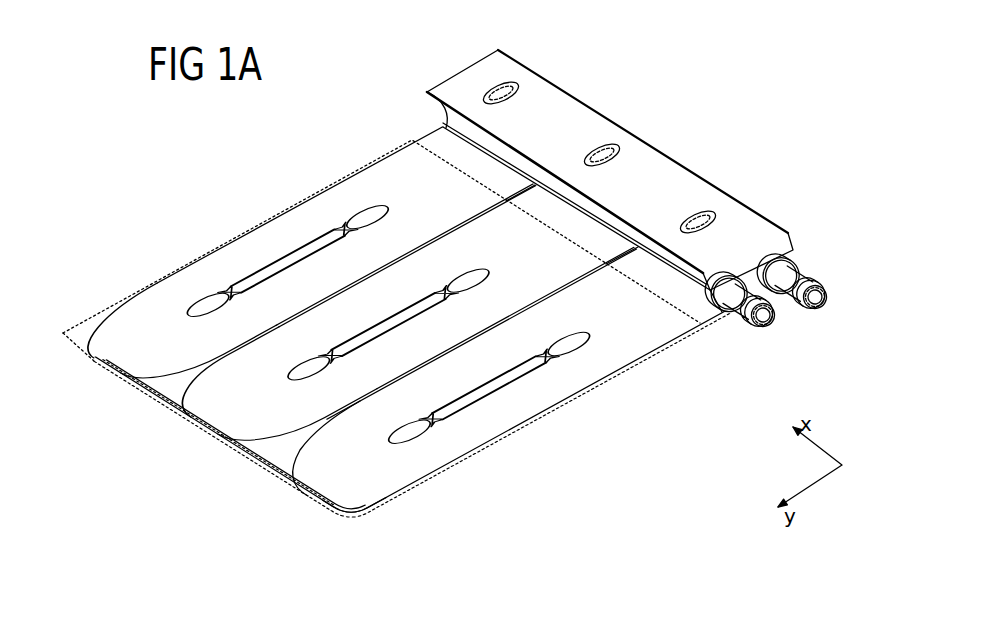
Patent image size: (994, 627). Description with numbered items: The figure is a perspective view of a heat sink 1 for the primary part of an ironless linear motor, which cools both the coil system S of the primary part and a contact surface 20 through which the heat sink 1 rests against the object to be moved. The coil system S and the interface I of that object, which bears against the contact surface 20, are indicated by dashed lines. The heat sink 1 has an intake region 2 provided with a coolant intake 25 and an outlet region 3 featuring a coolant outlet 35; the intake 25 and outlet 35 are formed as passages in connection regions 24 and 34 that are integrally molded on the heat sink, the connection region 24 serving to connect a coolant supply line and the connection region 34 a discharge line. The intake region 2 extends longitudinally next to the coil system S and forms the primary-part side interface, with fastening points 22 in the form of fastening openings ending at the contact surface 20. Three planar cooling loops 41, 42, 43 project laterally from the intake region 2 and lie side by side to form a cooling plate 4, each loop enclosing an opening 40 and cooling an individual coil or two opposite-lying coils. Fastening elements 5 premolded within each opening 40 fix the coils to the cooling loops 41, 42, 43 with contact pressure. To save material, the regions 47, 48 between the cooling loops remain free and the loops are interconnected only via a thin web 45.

The heat sink 1 is at (256, 176).
The interface I is at (477, 62).
The intake region 2 is at (437, 115).
The contact surface 20 is at (698, 196).
The fastening points 22 is at (505, 88).
The region between cooling loops 48 is at (521, 194).
The outlet region 3 is at (787, 253).
The connection region 34 is at (819, 283).
The coolant outlet 35 is at (816, 305).
The connection region 24 is at (757, 322).
The coolant intake 25 is at (766, 324).
The opening 40 is at (300, 256).
The fastening elements 5 is at (332, 232).
The cooling loop 43 is at (183, 291).
The cooling loop 42 is at (220, 424).
The cooling loop 41 is at (337, 495).
The region between cooling loops 47 is at (170, 387).
The thin web 45 is at (236, 461).
The cooling plate 4 is at (262, 450).
The coil system S is at (68, 340).